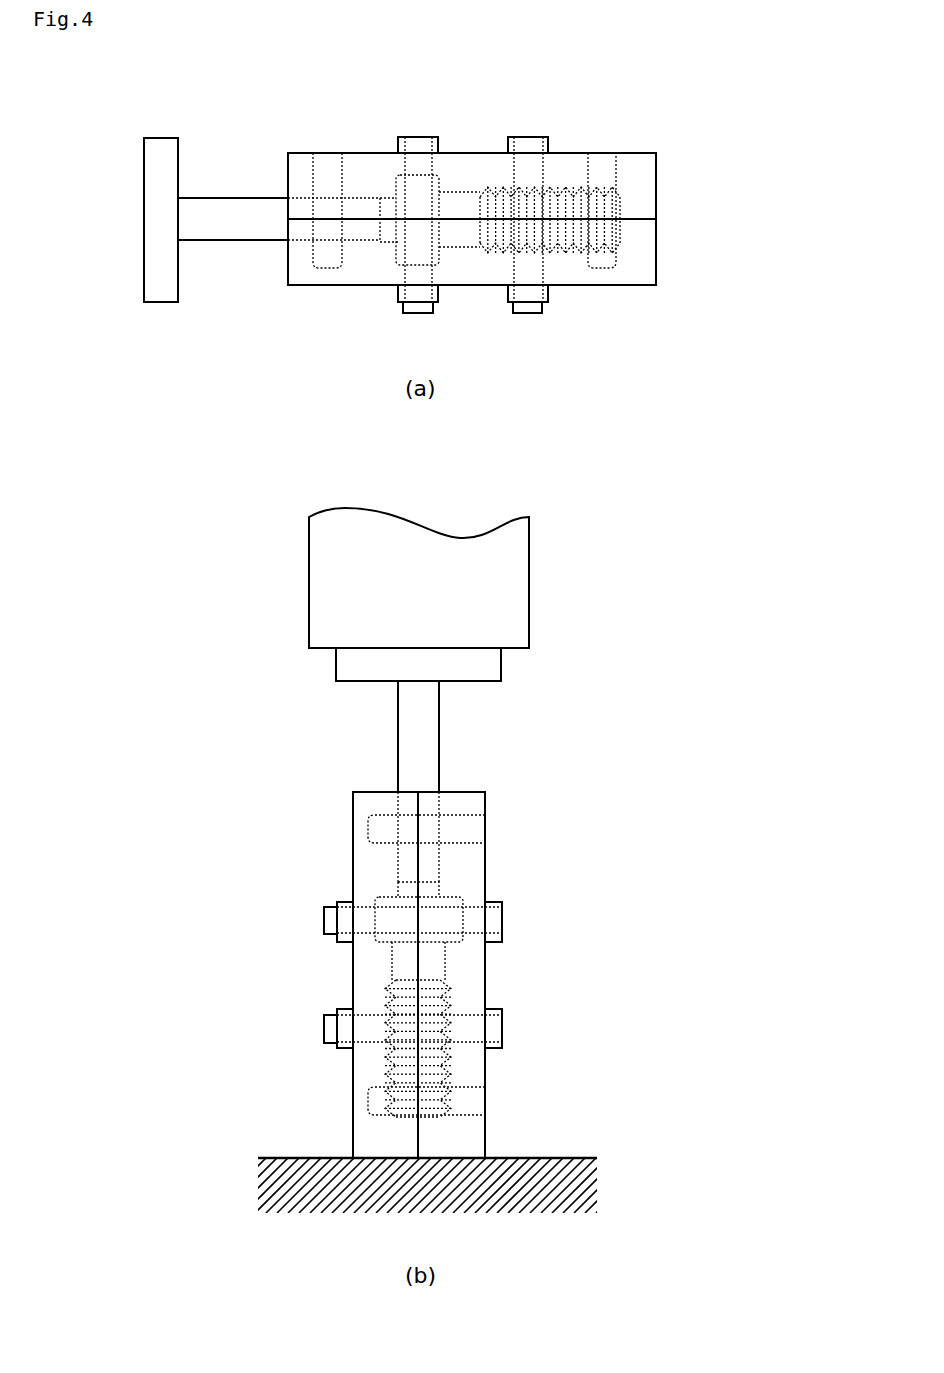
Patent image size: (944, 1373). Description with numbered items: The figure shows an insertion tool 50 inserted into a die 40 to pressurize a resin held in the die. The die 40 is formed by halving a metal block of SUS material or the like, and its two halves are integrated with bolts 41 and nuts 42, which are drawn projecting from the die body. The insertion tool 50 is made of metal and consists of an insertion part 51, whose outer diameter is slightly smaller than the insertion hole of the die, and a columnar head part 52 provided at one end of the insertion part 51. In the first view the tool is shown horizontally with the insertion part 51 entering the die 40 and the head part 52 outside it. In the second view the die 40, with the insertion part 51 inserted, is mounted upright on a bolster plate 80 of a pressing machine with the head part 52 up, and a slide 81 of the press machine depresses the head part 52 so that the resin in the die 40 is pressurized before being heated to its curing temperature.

The die 40 is at (638, 153).
The bolt 41 is at (426, 137).
The nut 42 is at (440, 298).
The insertion tool 50 is at (125, 217).
The insertion part 51 is at (220, 198).
The head part 52 is at (152, 138).
The bolster plate 80 is at (575, 1158).
The slide 81 is at (529, 563).